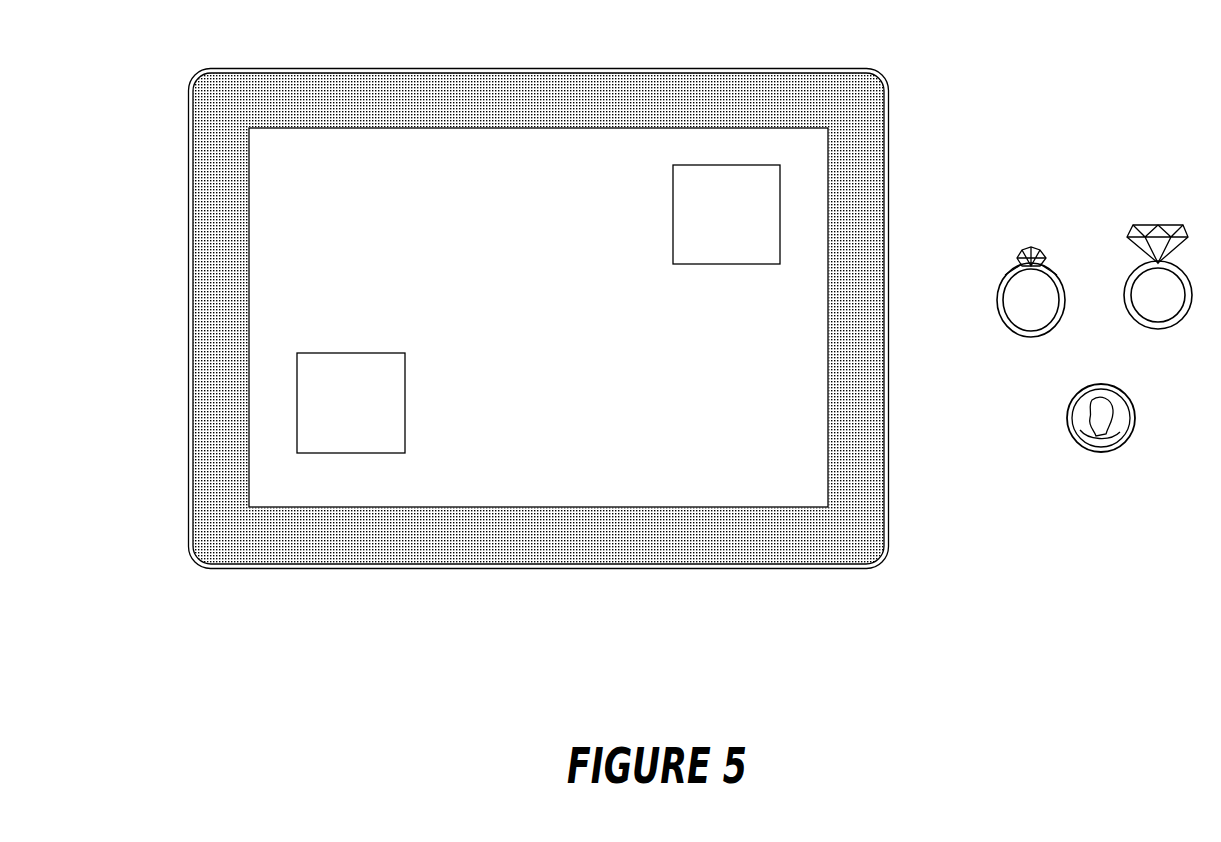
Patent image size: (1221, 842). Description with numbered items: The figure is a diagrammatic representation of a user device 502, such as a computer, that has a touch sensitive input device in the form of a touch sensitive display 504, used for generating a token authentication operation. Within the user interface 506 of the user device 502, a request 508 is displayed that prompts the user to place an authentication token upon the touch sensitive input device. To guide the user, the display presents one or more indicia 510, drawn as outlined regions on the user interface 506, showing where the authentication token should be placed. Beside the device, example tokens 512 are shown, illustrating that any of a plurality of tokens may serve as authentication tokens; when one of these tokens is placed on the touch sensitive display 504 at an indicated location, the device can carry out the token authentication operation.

The user device 502 is at (750, 68).
The touch sensitive display 504 is at (858, 112).
The user interface 506 is at (552, 479).
The request 508 is at (400, 212).
The indicia 510 is at (673, 192).
The example tokens 512 is at (1122, 143).